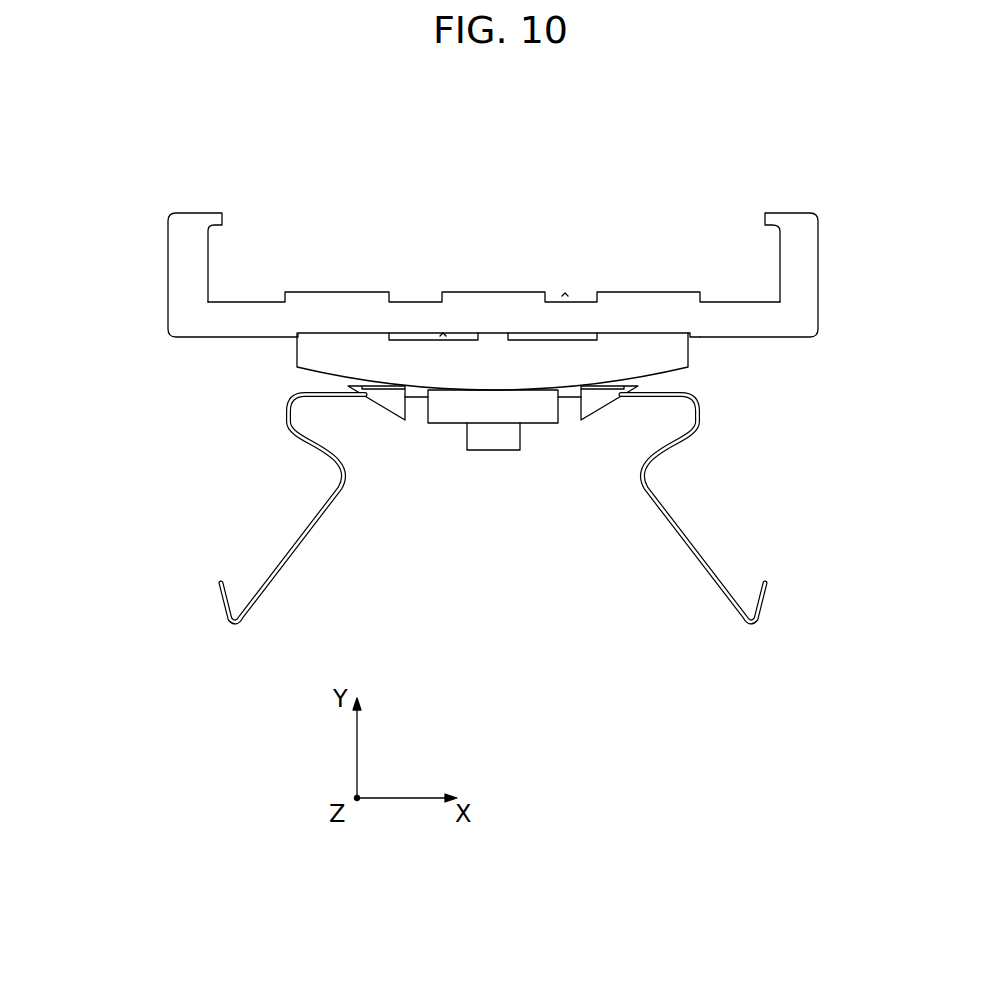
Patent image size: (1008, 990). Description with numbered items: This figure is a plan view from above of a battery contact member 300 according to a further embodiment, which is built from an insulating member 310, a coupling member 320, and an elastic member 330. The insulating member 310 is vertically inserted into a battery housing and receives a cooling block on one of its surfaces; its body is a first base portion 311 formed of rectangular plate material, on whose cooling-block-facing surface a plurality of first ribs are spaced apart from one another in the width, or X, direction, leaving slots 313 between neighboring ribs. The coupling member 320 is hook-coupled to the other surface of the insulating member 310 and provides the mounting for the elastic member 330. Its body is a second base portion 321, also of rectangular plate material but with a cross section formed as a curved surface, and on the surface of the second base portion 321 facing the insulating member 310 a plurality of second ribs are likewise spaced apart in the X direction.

The battery contact member 300 is at (355, 142).
The insulating member 310 is at (454, 365).
The first base portion 311 is at (755, 318).
The slots 313 is at (565, 294).
The coupling member 320 is at (430, 428).
The second base portion 321 is at (570, 368).
The elastic member 330 is at (740, 555).